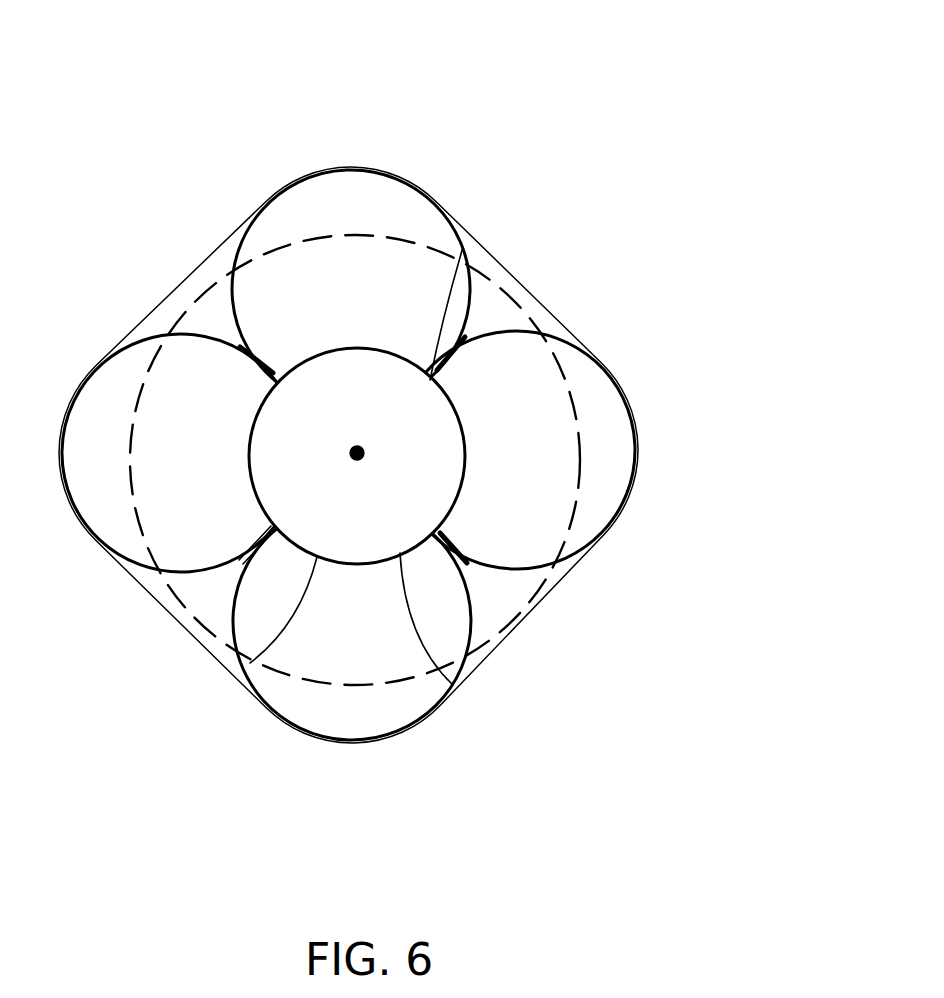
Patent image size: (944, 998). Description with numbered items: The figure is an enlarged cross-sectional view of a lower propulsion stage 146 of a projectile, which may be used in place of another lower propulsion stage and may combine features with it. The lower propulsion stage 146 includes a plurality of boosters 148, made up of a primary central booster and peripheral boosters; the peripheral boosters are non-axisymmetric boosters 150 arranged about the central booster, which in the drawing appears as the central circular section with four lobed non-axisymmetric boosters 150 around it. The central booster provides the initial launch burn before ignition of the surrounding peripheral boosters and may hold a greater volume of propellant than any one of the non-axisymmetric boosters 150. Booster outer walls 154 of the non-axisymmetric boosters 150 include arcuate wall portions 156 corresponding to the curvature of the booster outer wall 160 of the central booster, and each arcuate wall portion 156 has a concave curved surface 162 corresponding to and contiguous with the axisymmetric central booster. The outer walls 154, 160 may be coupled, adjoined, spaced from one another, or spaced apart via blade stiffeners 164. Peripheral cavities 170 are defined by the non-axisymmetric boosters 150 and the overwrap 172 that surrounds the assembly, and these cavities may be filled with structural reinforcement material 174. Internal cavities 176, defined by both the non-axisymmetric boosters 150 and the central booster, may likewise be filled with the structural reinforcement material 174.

The lower propulsion stage 146 is at (433, 93).
The boosters 148 is at (192, 373).
The non-axisymmetric boosters 150 is at (147, 337).
The booster outer walls 154 is at (470, 447).
The arcuate wall portions 156 is at (408, 370).
The booster outer wall 160 is at (453, 685).
The concave curved surface 162 is at (250, 663).
The blade stiffeners 164 is at (243, 562).
The peripheral cavities 170 is at (508, 592).
The overwrap 172 is at (641, 457).
The structural reinforcement material 174 is at (498, 322).
The internal cavities 176 is at (468, 272).